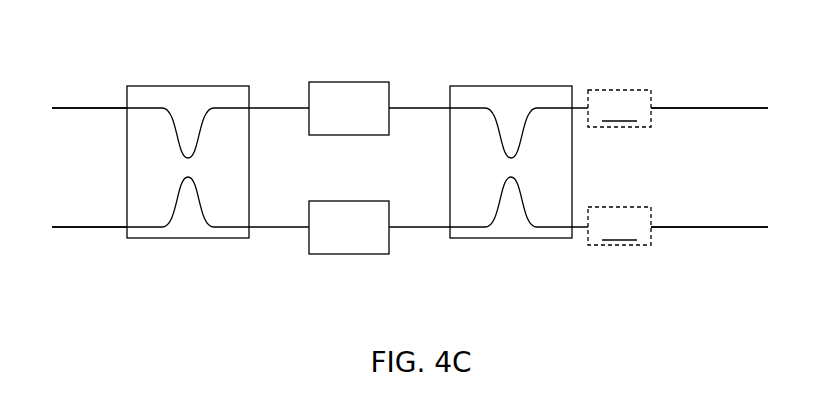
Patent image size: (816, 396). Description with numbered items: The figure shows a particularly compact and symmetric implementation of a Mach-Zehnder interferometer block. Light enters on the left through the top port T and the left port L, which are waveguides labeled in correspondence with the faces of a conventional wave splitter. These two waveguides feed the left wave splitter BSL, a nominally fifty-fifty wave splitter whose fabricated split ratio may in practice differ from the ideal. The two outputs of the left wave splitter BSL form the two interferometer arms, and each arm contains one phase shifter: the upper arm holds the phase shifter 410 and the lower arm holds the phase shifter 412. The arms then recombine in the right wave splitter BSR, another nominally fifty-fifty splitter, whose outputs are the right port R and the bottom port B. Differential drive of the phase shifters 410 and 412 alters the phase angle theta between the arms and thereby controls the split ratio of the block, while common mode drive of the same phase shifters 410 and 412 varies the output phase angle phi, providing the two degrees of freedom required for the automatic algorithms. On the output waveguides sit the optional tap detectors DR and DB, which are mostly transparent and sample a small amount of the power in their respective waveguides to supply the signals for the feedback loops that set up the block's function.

The phase shifter 410 is at (350, 80).
The phase shifter 412 is at (347, 255).
The wave splitter BSL is at (183, 239).
The wave splitter BSR is at (510, 239).
The detector DR is at (619, 108).
The detector DB is at (619, 226).
The top port T is at (68, 108).
The left port L is at (68, 227).
The right port R is at (757, 107).
The bottom port B is at (744, 228).